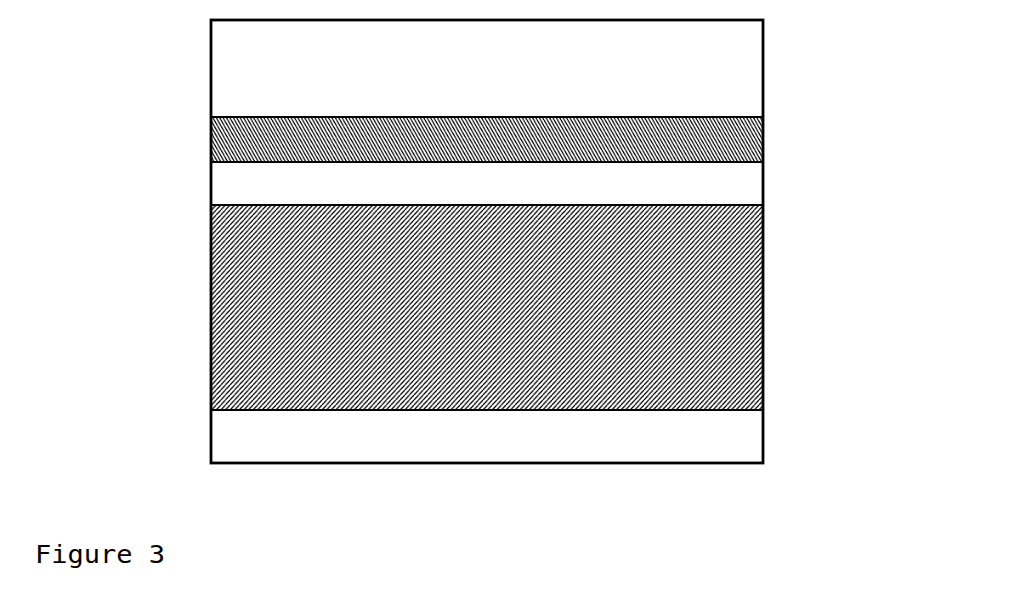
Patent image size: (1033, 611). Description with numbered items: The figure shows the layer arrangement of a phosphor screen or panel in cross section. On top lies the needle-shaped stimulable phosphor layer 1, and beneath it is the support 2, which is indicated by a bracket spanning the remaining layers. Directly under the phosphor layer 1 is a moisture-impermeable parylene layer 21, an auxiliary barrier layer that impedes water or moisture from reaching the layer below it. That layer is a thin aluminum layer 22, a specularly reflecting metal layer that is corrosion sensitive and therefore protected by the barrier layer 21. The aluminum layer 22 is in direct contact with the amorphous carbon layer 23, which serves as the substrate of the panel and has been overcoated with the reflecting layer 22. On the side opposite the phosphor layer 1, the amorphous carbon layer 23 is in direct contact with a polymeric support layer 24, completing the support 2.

The phosphor layer 1 is at (733, 65).
The support 2 is at (183, 465).
The moisture barrier layer 21 is at (763, 137).
The specularly reflecting layer 22 is at (753, 193).
The amorphous carbon layer 23 is at (753, 302).
The polymeric layer 24 is at (753, 443).